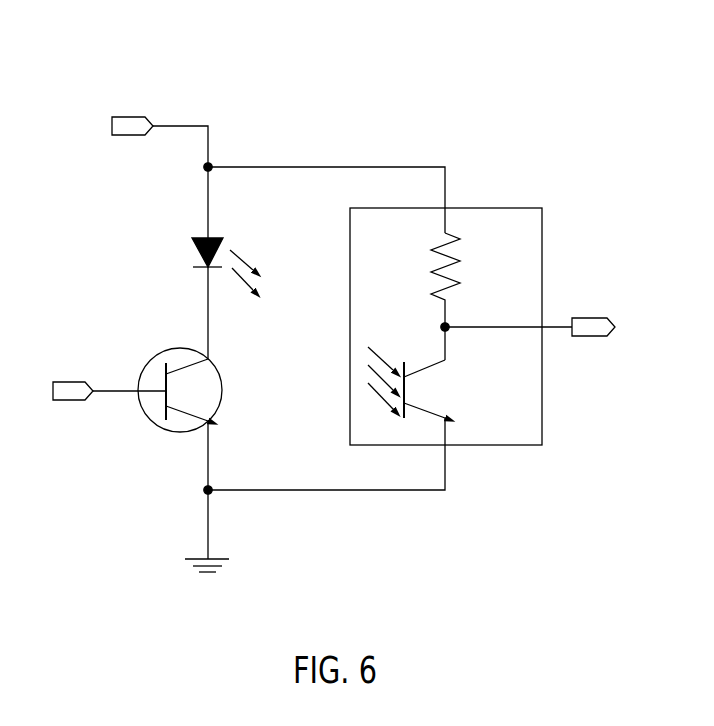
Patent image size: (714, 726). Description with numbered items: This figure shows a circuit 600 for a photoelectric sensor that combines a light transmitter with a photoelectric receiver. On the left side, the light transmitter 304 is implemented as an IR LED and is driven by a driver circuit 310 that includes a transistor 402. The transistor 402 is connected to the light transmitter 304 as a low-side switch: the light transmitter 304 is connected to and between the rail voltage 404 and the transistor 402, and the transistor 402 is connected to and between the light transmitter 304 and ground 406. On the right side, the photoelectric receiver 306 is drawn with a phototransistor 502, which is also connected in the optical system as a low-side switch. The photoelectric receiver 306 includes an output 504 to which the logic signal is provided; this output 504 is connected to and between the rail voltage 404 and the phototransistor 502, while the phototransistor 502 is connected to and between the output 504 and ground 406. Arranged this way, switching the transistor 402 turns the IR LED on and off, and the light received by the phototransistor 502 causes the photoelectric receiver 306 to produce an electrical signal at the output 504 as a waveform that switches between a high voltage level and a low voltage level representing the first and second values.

The circuit 600 is at (382, 67).
The rail voltage 404 is at (162, 108).
The light transmitter 304 is at (180, 242).
The driver circuit 310 is at (132, 332).
The transistor 402 is at (237, 407).
The ground 406 is at (175, 533).
The photoelectric receiver 306 is at (515, 185).
The phototransistor 502 is at (448, 387).
The output 504 is at (603, 352).